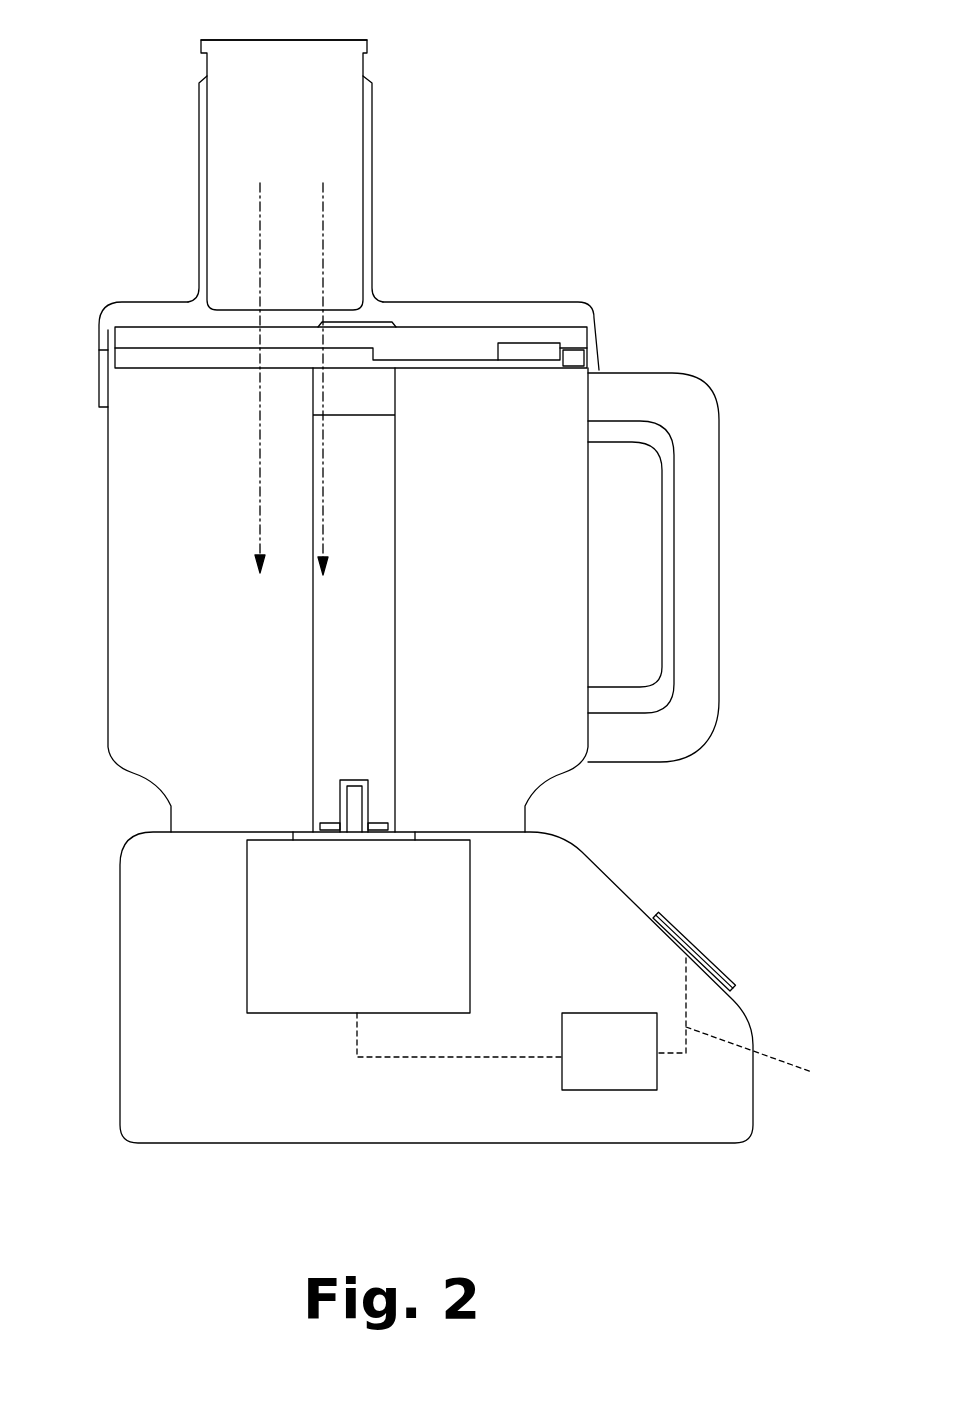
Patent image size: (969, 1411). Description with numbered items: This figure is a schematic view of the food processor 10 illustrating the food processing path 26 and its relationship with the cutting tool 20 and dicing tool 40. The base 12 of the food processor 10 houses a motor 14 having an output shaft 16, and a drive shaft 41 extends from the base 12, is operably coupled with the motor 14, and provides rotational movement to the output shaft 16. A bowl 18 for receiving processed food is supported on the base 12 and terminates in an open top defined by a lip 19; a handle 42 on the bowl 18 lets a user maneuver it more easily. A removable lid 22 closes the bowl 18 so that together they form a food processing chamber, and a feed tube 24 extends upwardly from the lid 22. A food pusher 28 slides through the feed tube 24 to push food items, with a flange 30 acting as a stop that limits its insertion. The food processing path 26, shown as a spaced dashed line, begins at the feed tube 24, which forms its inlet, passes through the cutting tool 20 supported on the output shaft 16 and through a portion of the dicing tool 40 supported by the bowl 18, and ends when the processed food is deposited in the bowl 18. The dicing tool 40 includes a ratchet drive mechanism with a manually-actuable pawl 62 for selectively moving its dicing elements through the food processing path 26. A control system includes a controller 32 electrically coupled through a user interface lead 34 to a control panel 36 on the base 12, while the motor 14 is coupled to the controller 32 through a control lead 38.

The food processor 10 is at (89, 31).
The base 12 is at (114, 860).
The motor 14 is at (270, 970).
The output shaft 16 is at (311, 614).
The bowl 18 is at (589, 531).
The lip 19 is at (108, 350).
The cutting tool 20 is at (580, 336).
The lid 22 is at (490, 300).
The feed tube 24 is at (200, 163).
The food processing path 26 is at (323, 257).
The food pusher 28 is at (234, 218).
The flange 30 is at (366, 40).
The controller 32 is at (623, 1090).
The user interface lead 34 is at (751, 1024).
The control panel 36 is at (708, 950).
The control lead 38 is at (397, 1058).
The dicing tool 40 is at (584, 357).
The drive shaft 41 is at (355, 780).
The handle 42 is at (714, 614).
The pawl 62 is at (541, 337).